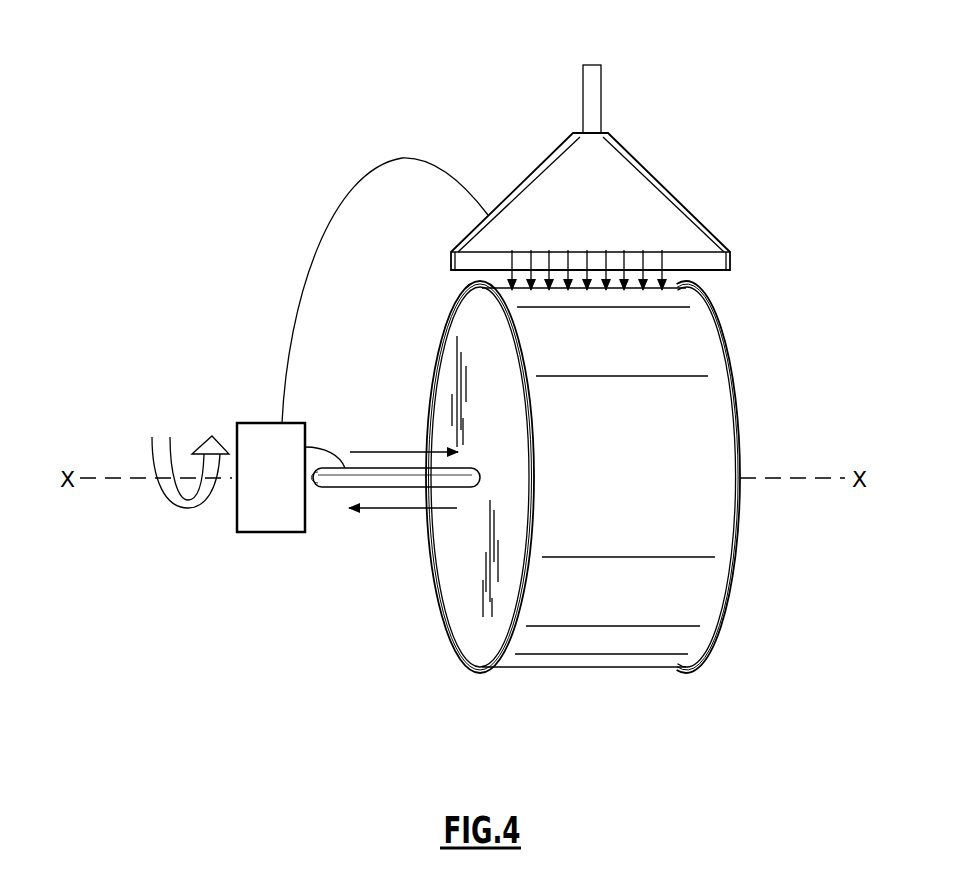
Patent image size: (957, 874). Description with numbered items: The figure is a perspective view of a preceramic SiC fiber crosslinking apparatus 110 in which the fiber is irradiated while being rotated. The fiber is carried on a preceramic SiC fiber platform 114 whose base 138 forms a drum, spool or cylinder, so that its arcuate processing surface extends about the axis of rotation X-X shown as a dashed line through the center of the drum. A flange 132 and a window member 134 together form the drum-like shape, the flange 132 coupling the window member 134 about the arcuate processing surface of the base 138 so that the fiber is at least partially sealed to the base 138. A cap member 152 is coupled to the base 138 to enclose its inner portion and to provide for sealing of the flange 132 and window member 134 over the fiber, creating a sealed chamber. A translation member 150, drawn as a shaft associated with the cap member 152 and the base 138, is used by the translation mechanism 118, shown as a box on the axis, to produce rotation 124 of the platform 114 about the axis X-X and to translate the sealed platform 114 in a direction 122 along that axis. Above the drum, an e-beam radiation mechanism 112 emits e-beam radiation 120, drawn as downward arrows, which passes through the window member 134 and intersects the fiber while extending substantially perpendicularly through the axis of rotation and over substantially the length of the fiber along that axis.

The preceramic SiC fiber crosslinking apparatus 110 is at (326, 62).
The e-beam radiation mechanism 112 is at (663, 188).
The preceramic SiC fiber platform 114 is at (608, 472).
The translation mechanism 118 is at (294, 488).
The e-beam radiation 120 is at (663, 258).
The direction of translation 122 is at (383, 452).
The rotation of the platform 124 is at (160, 492).
The flange 132 is at (447, 303).
The window member 134 is at (687, 438).
The base 138 is at (754, 396).
The translation member 150 is at (335, 489).
The cap member 152 is at (455, 388).